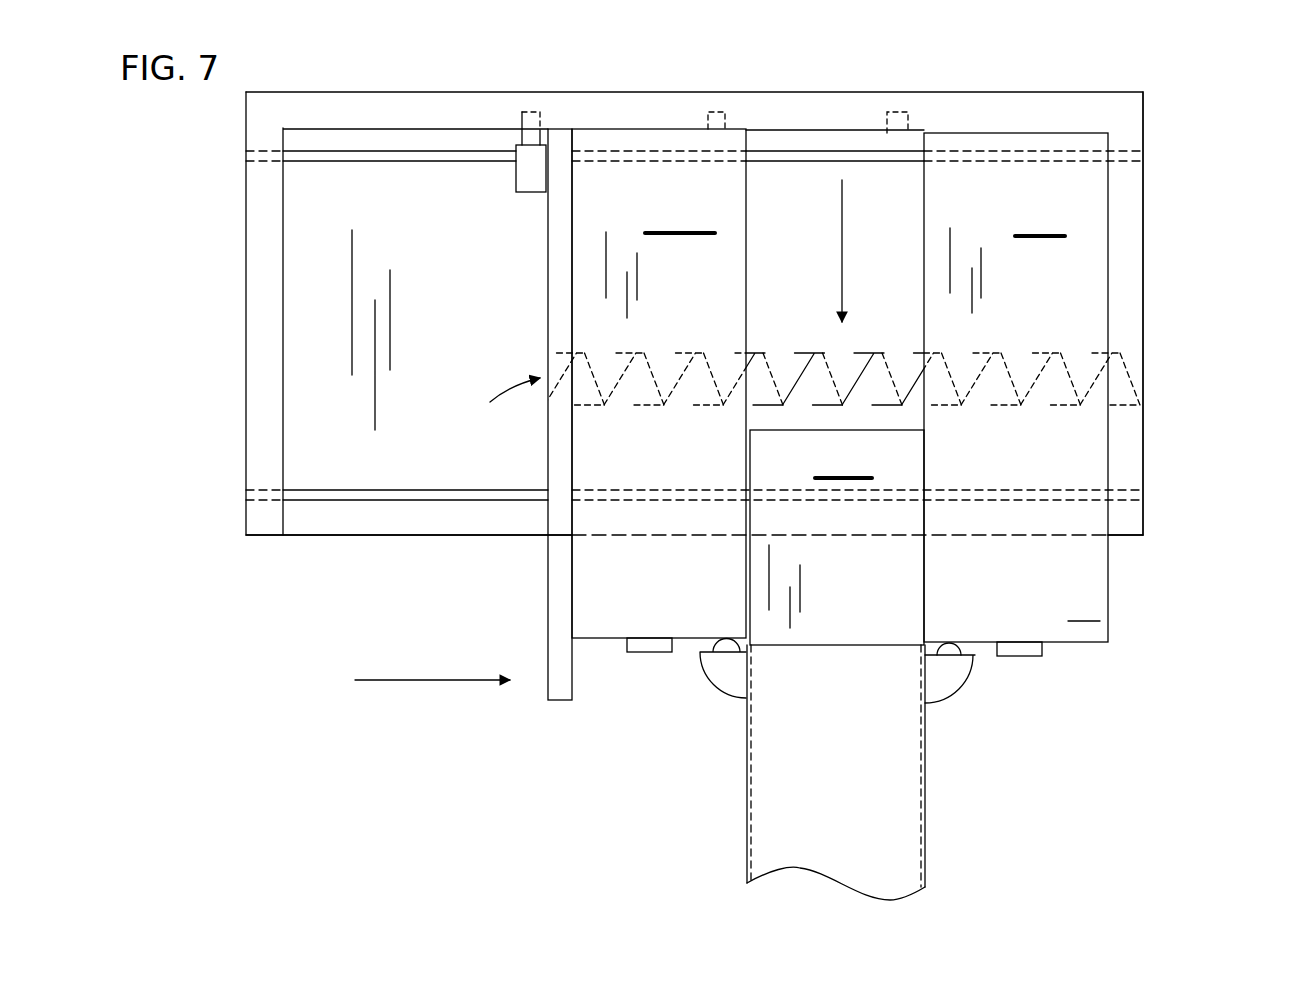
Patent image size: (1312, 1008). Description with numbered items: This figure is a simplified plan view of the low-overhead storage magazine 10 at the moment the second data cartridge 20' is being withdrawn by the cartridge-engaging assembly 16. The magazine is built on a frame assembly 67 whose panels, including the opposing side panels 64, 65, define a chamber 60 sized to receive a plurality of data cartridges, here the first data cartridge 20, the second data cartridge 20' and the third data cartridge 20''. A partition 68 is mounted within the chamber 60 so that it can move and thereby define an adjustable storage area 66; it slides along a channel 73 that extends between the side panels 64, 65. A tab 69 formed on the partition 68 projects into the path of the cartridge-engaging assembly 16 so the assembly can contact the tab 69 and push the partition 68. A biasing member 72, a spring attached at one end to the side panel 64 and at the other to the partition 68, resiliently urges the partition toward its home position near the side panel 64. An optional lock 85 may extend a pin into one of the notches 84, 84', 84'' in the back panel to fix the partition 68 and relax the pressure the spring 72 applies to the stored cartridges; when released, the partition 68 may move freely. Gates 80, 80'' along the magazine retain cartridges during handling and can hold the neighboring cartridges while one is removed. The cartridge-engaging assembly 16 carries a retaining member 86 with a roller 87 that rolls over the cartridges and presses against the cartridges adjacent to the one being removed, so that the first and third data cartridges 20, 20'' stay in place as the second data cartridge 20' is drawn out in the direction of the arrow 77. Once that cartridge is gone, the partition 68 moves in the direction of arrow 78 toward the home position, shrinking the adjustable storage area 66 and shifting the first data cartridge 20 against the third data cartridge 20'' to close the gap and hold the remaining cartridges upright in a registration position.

The storage magazine 10 is at (1193, 182).
The cartridge-engaging assembly 16 is at (925, 782).
The first data cartridge 20 is at (1016, 387).
The second data cartridge 20' is at (837, 534).
The third data cartridge 20'' is at (659, 383).
The chamber 60 is at (409, 543).
The side panel 64 is at (1143, 290).
The side panel 65 is at (250, 443).
The adjustable storage area 66 is at (1140, 575).
The frame assembly 67 is at (236, 527).
The partition 68 is at (497, 407).
The tab 69 is at (573, 693).
The biasing member 72 is at (808, 351).
The channel 73 is at (348, 160).
The direction of container drop 77 is at (843, 273).
The arrow 78 is at (414, 681).
The gate 80 is at (629, 671).
The gate 80'' is at (1060, 676).
The notch 84 is at (502, 123).
The notch 84' is at (686, 116).
The notch 84'' is at (861, 117).
The lock 85 is at (507, 173).
The retaining member 86 is at (958, 711).
The roller 87 is at (963, 655).